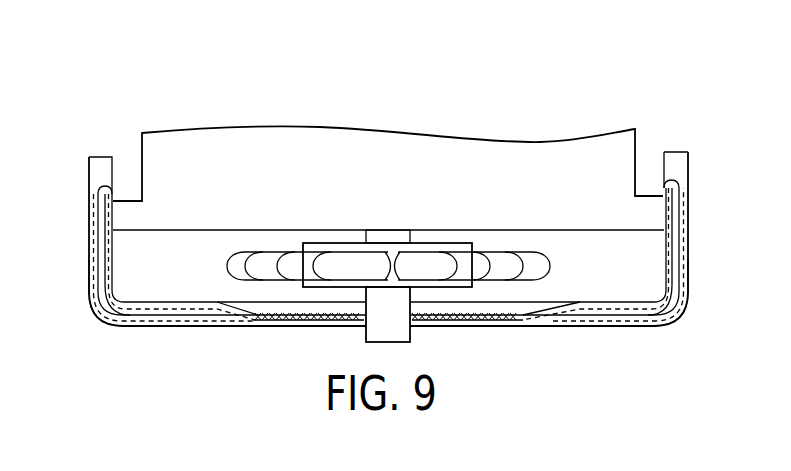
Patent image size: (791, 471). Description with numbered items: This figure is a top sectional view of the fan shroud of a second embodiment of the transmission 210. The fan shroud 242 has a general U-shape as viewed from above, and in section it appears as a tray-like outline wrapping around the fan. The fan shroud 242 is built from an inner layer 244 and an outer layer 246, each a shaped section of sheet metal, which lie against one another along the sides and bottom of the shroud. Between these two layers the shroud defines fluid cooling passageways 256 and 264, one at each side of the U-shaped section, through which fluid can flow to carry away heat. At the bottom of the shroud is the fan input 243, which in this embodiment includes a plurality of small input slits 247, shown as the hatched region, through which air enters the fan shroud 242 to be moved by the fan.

The transmission 210 is at (598, 70).
The fan shroud 242 is at (584, 336).
The fan input 243 is at (300, 362).
The inner layer 244 is at (152, 302).
The outer layer 246 is at (173, 330).
The input slits 247 is at (460, 327).
The fluid cooling passageway 256 is at (660, 325).
The fluid cooling passageway 264 is at (115, 325).